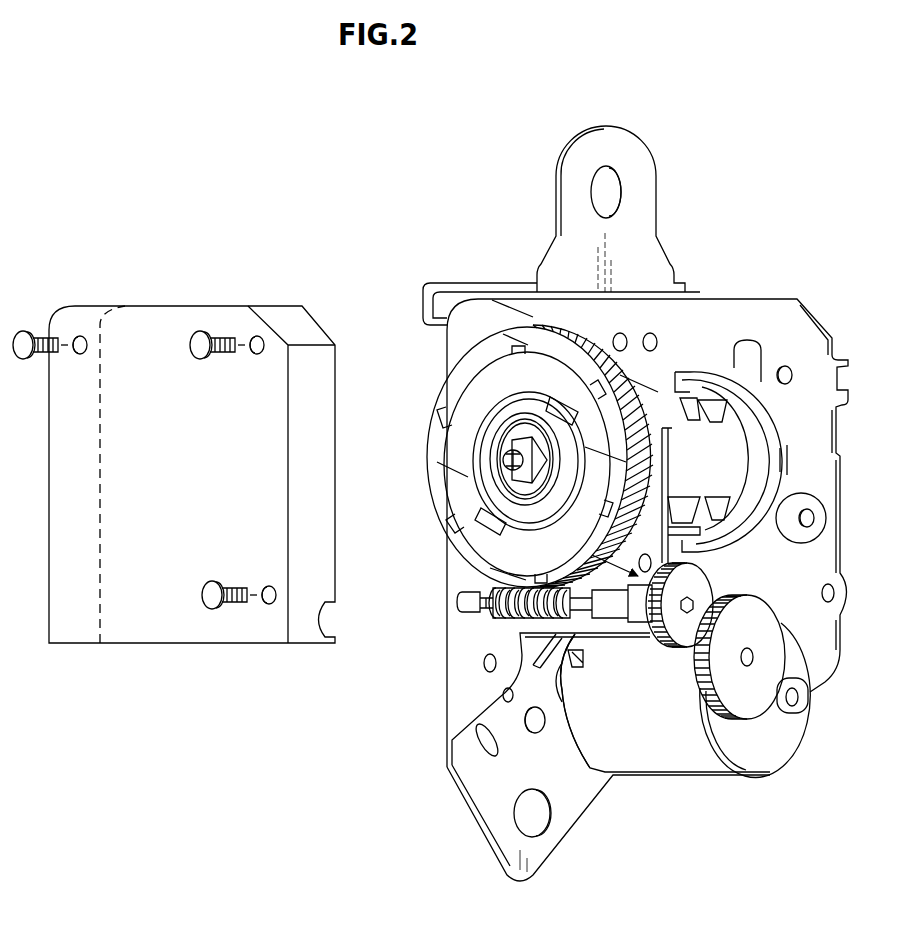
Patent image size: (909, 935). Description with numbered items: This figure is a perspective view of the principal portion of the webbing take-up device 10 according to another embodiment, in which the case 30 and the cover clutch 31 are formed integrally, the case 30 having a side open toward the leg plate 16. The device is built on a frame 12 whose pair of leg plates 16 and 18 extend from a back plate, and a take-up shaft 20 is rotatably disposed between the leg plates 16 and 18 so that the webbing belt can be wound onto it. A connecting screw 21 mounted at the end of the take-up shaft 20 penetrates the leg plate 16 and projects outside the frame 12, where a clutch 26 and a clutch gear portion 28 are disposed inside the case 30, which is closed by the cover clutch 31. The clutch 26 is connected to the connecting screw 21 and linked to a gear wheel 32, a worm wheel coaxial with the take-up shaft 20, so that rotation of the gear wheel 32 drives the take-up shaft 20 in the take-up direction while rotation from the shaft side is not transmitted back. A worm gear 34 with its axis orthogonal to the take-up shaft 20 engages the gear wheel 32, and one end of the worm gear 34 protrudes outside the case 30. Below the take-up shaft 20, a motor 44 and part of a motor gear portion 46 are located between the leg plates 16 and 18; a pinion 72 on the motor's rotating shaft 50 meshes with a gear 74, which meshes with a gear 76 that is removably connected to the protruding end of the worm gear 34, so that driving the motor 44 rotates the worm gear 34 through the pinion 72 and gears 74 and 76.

The webbing take-up device 10 is at (758, 183).
The frame 12 is at (705, 294).
The leg plate 16 is at (468, 322).
The leg plate 18 is at (765, 313).
The take-up shaft 20 is at (735, 455).
The connecting screw 21 is at (490, 488).
The clutch 26 is at (464, 457).
The clutch gear portion 28 is at (482, 628).
The case 30 is at (174, 435).
The cover clutch 31 is at (165, 338).
The gear wheel 32 is at (470, 568).
The worm gear 34 is at (514, 623).
The motor 44 is at (683, 763).
The motor gear portion 46 is at (678, 697).
The rotating shaft 50 is at (800, 697).
The pinion 72 is at (783, 718).
The gear 74 is at (750, 720).
The gear 76 is at (665, 648).